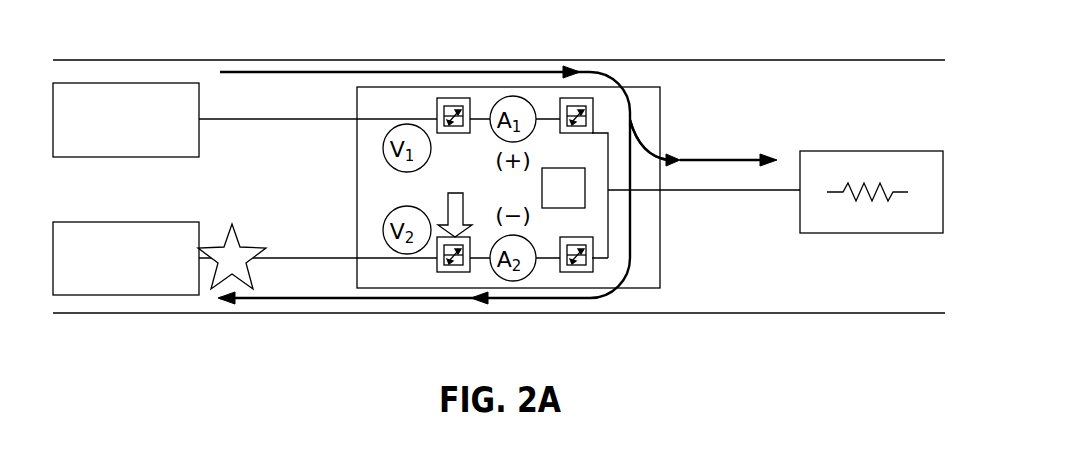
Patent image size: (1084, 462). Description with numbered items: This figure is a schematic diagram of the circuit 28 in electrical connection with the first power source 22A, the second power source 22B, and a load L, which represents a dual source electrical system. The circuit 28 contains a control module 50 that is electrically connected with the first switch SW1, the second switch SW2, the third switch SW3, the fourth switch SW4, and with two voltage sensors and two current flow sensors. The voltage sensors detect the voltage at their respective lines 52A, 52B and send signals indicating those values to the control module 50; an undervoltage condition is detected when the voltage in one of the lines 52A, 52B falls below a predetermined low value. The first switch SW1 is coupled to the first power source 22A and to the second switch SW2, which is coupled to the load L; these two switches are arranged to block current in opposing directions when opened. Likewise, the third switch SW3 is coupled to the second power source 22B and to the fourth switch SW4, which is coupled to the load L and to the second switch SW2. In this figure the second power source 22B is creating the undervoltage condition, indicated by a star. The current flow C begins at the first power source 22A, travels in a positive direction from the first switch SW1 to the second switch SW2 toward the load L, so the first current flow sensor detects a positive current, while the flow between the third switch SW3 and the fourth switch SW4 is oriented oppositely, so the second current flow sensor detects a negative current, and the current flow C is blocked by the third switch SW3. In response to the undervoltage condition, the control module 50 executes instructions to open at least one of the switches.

The first power source 22A is at (104, 134).
The second power source 22B is at (104, 272).
The line 52A is at (276, 121).
The line 52B is at (284, 257).
The circuit 28 is at (662, 255).
The control module 50 is at (577, 202).
The first switch SW1 is at (438, 97).
The second switch SW2 is at (586, 97).
The third switch SW3 is at (438, 273).
The fourth switch SW4 is at (586, 273).
The current flow C is at (633, 122).
The load L is at (871, 192).